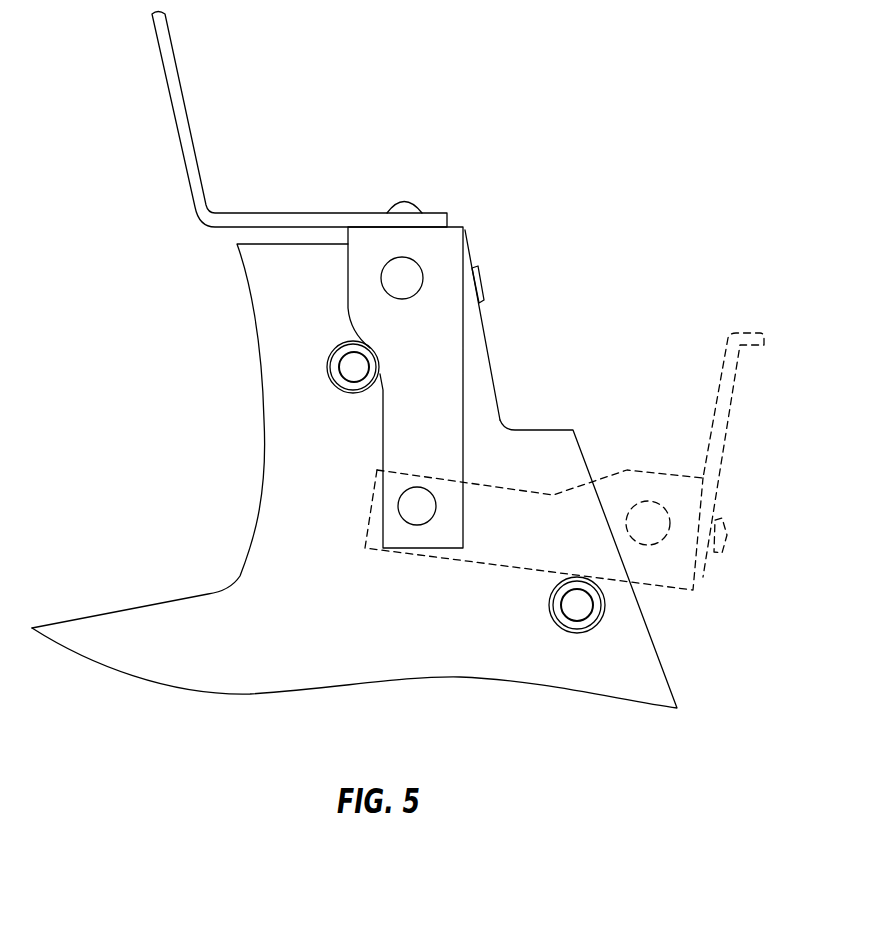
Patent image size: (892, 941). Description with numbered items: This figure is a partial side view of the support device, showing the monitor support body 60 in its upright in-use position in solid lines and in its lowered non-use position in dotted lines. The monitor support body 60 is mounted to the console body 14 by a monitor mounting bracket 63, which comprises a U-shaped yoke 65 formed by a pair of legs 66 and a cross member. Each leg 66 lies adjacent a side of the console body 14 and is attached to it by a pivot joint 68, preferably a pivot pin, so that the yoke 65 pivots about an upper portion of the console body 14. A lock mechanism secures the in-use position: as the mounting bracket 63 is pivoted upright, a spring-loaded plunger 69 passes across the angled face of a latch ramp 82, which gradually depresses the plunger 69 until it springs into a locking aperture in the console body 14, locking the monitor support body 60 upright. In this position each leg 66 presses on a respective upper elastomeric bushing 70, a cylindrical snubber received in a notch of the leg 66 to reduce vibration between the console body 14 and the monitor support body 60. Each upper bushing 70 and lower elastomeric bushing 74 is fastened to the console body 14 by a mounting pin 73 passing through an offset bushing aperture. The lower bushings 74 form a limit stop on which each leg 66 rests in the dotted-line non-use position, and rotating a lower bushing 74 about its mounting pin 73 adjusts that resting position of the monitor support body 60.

The console body 14 is at (207, 593).
The monitor support body 60 is at (498, 160).
The monitor mounting bracket 63 is at (472, 385).
The U-shaped yoke 65 is at (466, 238).
The leg 66 is at (470, 428).
The pivot joint 68 is at (417, 526).
The spring-loaded plunger 69 is at (381, 279).
The upper elastomeric bushing 70 is at (354, 392).
The mounting pin 73 is at (340, 371).
The lower elastomeric bushing 74 is at (570, 636).
The latch ramp 82 is at (480, 292).